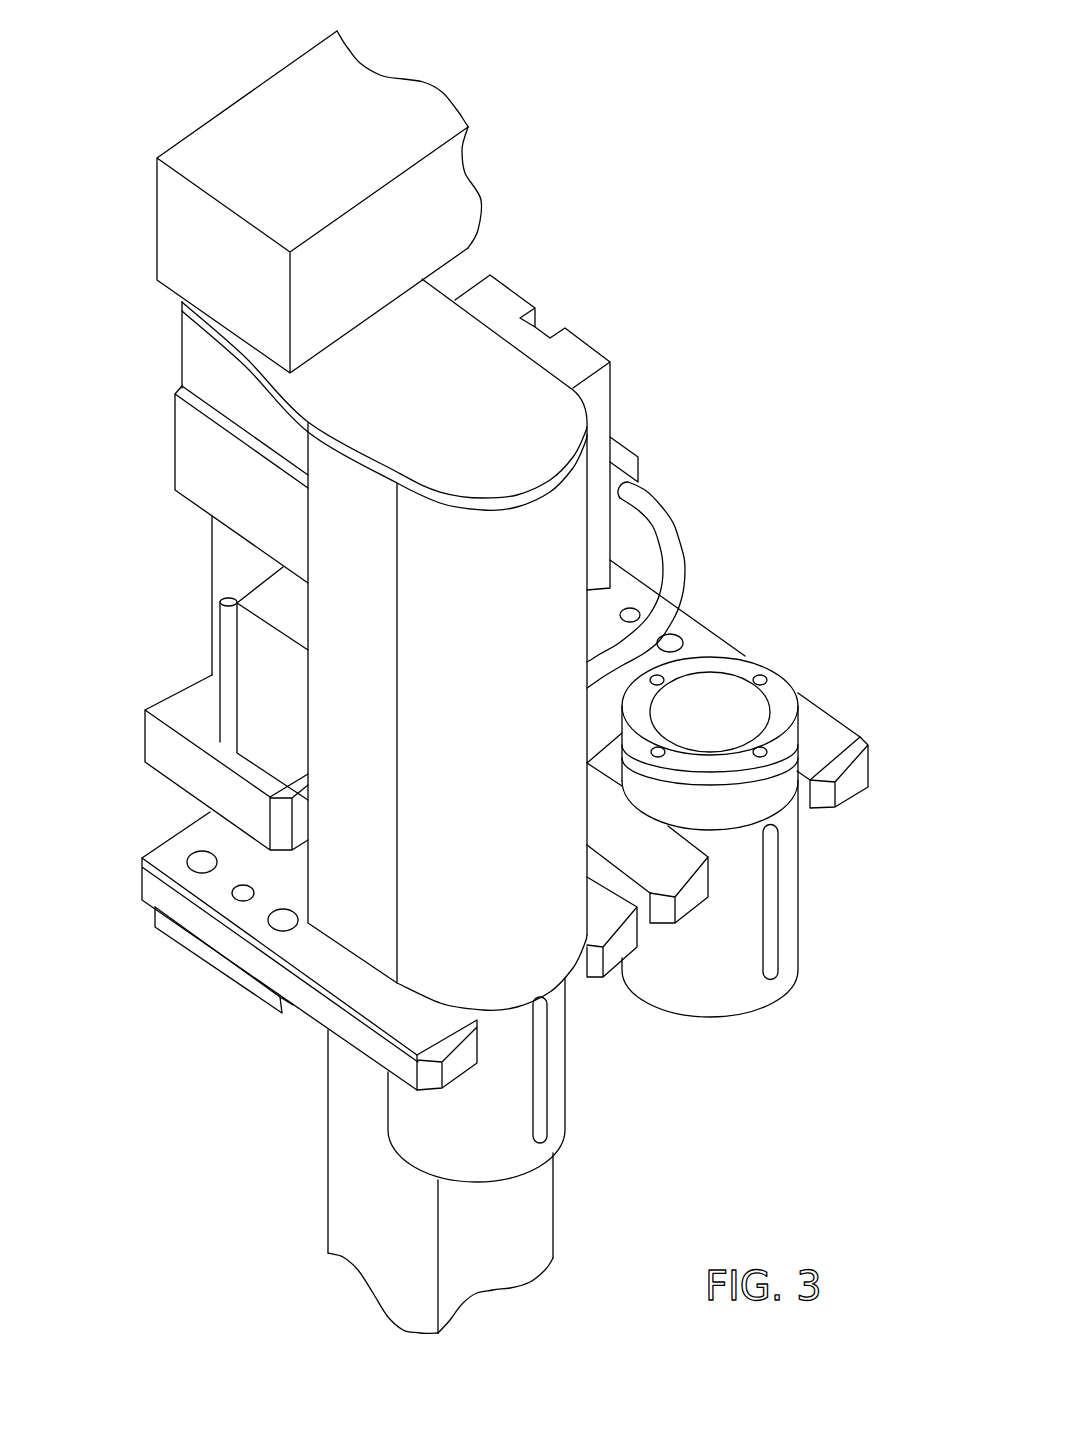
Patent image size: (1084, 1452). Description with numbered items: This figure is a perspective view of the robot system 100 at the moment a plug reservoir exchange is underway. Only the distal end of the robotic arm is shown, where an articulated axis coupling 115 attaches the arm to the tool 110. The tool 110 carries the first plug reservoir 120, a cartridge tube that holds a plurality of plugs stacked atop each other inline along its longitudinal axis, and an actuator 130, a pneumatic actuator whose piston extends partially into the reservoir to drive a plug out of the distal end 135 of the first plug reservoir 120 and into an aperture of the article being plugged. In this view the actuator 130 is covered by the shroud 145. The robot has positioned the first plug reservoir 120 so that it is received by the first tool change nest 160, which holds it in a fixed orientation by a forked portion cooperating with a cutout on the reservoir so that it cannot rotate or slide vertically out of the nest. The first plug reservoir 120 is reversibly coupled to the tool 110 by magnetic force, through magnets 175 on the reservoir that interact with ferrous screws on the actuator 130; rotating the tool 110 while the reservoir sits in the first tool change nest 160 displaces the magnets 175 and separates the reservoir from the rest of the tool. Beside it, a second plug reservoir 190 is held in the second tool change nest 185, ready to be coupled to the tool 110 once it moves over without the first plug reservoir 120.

The robot system 100 is at (725, 42).
The tool 110 is at (627, 308).
The articulated axis coupling 115 is at (238, 95).
The first plug reservoir 120 is at (567, 1103).
The actuator 130 is at (553, 513).
The distal end 135 is at (527, 1177).
The shroud 145 is at (587, 593).
The first tool change nest 160 is at (166, 812).
The magnets 175 is at (656, 680).
The second tool change nest 185 is at (703, 620).
The second plug reservoir 190 is at (797, 883).